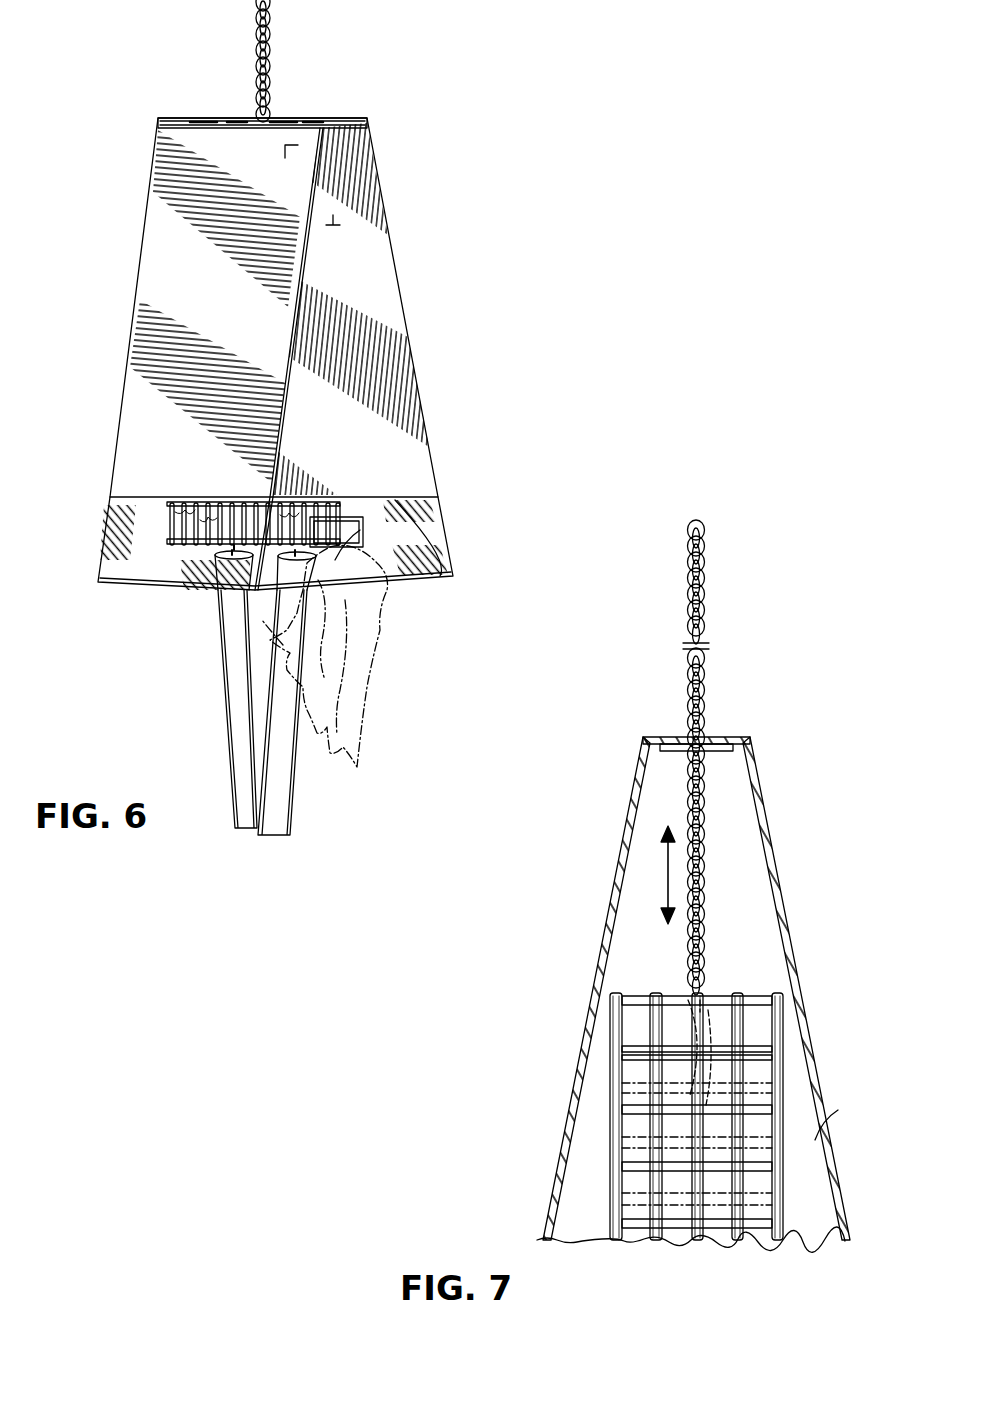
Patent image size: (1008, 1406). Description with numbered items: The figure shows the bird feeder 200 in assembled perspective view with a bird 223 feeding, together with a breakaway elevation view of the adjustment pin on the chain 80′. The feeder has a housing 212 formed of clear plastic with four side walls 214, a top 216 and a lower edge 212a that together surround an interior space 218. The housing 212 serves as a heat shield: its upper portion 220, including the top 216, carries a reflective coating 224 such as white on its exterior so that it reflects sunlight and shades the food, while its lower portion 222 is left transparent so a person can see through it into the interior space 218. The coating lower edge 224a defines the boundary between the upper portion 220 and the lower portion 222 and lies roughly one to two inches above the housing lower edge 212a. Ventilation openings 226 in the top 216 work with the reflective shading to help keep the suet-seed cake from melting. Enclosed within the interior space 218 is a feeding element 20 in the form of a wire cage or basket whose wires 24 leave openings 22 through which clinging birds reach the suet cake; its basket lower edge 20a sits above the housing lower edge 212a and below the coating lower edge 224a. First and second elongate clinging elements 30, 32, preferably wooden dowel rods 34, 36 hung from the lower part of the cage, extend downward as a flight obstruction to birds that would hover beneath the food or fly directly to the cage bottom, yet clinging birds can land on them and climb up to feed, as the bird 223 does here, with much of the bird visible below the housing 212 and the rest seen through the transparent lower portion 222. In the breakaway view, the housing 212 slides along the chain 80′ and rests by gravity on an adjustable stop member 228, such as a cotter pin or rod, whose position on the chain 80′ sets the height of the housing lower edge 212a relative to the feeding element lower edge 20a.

In FIG. 6, the bird feeder 200 is at (140, 120).
In FIG. 7, the bird feeder 200 is at (567, 928).
In FIG. 6, the chain 80′ is at (268, 45).
In FIG. 7, the chain 80′ is at (709, 604).
In FIG. 6, the ventilation openings 226 is at (236, 120).
In FIG. 6, the top 216 is at (330, 123).
In FIG. 7, the top 216 is at (725, 740).
In FIG. 6, the reflective coating 224 is at (333, 215).
In FIG. 6, the side walls 214 is at (160, 265).
In FIG. 6, the upper portion 220 is at (367, 123).
In FIG. 6, the housing 212 is at (418, 372).
In FIG. 7, the housing 212 is at (782, 922).
In FIG. 6, the lower portion 222 is at (453, 578).
In FIG. 6, the coating lower edge 224a is at (438, 572).
In FIG. 6, the interior space 218 is at (375, 565).
In FIG. 7, the interior space 218 is at (800, 1130).
In FIG. 6, the bird 223 is at (367, 683).
In FIG. 6, the wires 24 is at (212, 525).
In FIG. 6, the openings 22 is at (356, 520).
In FIG. 6, the feeding element 20 is at (168, 518).
In FIG. 7, the feeding element 20 is at (640, 1130).
In FIG. 6, the basket lower edge 20a is at (185, 547).
In FIG. 6, the housing lower edge 212a is at (110, 582).
In FIG. 6, the first elongate clinging element 30 is at (224, 697).
In FIG. 6, the wooden dowel rod 34 is at (240, 746).
In FIG. 6, the second elongate clinging element 32 is at (293, 822).
In FIG. 6, the wooden dowel rod 36 is at (268, 840).
In FIG. 7, the adjustable stop member 228 is at (720, 752).